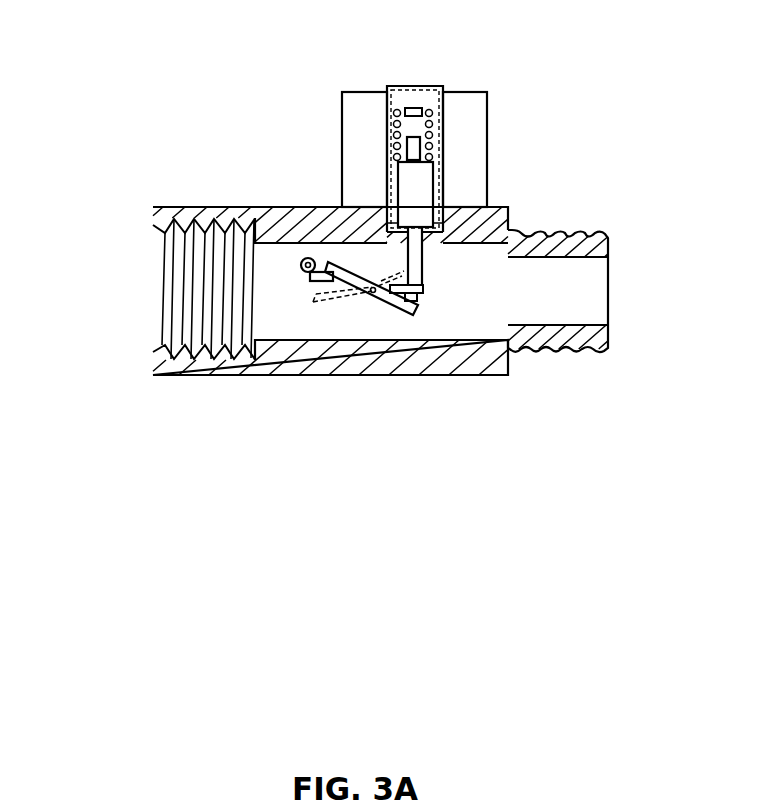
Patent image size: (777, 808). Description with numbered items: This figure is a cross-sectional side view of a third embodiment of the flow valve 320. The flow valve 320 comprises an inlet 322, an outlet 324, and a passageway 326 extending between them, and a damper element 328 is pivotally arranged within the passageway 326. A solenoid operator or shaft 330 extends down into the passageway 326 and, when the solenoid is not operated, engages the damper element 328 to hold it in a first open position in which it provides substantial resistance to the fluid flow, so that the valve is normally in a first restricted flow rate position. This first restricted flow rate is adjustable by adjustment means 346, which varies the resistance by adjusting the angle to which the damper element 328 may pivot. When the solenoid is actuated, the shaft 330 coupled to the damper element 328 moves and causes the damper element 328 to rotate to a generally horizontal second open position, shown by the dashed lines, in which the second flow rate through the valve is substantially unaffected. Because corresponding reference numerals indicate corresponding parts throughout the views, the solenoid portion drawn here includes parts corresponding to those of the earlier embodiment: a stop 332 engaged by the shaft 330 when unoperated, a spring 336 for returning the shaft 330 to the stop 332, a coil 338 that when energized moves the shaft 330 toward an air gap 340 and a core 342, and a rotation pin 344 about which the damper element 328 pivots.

The flow valve 320 is at (178, 104).
The inlet 322 is at (597, 292).
The outlet 324 is at (147, 288).
The passageway 326 is at (287, 336).
The damper element 328 is at (418, 303).
The solenoid operator or shaft 330 is at (483, 207).
The valve body top wall 332 is at (327, 208).
The coil windings 336 is at (388, 125).
The solenoid housing 338 is at (475, 132).
The solenoid sleeve 340 is at (442, 112).
The plunger stop 342 is at (413, 110).
The flapper 344 is at (374, 292).
The adjustment means 346 is at (303, 260).